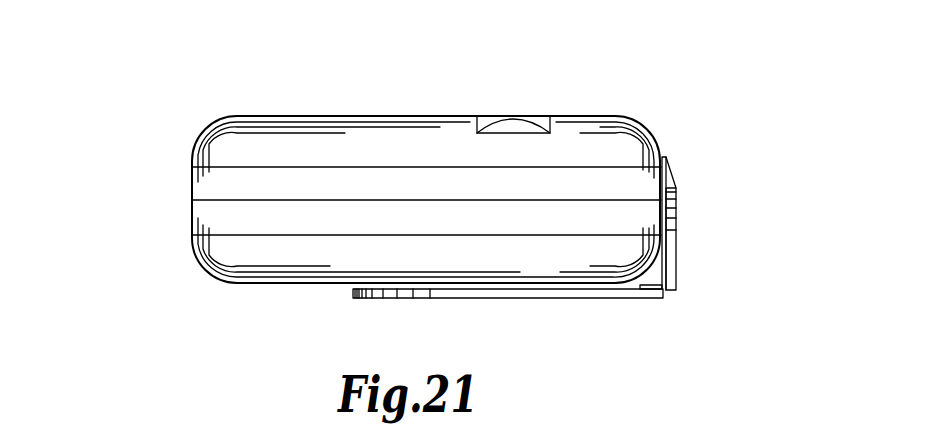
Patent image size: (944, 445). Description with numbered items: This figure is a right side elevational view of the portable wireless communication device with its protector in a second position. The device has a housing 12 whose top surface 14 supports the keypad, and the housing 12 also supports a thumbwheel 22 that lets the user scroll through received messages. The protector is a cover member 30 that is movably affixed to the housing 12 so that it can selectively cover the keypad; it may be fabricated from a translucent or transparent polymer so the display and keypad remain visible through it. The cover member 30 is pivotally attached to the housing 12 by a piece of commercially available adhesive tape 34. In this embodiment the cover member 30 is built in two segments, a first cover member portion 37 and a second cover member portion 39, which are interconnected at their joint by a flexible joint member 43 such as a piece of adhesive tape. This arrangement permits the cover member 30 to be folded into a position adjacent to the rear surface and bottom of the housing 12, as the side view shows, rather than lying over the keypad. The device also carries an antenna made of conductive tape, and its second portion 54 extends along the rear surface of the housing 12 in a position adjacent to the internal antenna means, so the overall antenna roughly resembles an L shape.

The housing 12 is at (184, 175).
The top surface 14 is at (262, 115).
The thumbwheel 22 is at (503, 127).
The cover member 30 is at (579, 316).
The adhesive tape 34 is at (662, 157).
The first cover member portion 37 is at (676, 257).
The second cover member portion 39 is at (640, 300).
The flexible joint member 43 is at (665, 289).
The second portion of the antenna 54 is at (682, 165).